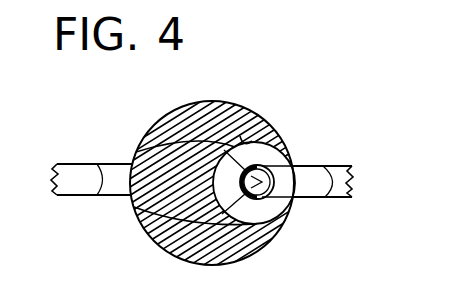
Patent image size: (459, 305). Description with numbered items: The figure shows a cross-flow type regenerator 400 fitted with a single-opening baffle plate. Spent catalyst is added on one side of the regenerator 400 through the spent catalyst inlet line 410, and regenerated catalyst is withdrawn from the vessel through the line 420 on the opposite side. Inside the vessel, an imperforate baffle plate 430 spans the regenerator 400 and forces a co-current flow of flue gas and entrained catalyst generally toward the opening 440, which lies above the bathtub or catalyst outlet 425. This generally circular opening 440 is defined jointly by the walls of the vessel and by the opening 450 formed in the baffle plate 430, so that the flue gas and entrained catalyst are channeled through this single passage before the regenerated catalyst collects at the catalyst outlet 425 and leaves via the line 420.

The cross-flow type regenerator 400 is at (273, 138).
The spent catalyst inlet line 410 is at (75, 164).
The regenerated catalyst withdrawal line 420 is at (333, 198).
The catalyst outlet 425 is at (268, 169).
The imperforate baffle plate 430 is at (262, 250).
The opening 440 is at (276, 207).
The opening in the baffle plate 450 is at (254, 108).